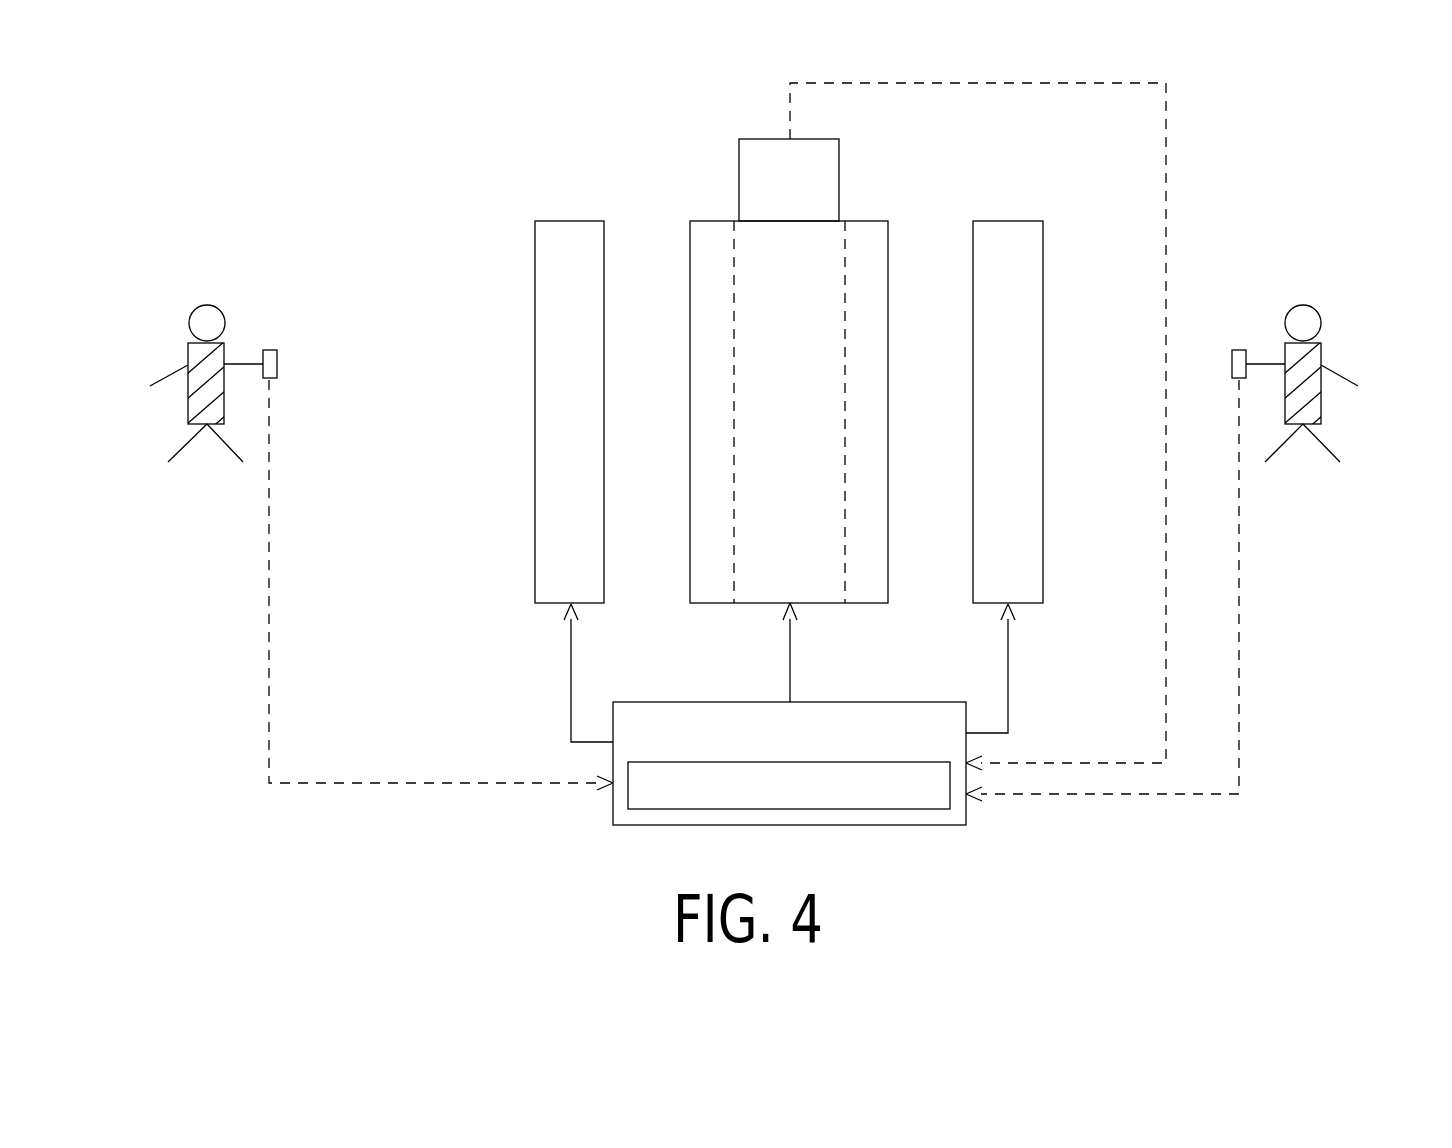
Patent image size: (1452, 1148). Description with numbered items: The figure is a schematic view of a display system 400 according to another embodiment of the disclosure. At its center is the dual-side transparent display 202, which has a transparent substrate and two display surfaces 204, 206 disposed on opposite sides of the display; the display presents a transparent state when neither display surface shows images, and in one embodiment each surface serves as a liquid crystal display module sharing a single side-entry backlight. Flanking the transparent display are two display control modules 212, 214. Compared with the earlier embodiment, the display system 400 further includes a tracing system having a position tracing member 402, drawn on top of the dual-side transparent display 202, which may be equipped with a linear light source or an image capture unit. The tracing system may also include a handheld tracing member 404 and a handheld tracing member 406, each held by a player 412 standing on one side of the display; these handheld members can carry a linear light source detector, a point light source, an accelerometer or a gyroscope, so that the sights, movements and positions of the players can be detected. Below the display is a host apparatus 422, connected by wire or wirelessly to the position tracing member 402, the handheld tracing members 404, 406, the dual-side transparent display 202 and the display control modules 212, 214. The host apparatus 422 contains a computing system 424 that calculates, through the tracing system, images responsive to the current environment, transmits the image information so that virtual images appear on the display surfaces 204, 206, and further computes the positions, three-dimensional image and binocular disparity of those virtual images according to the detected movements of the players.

The display system 400 is at (400, 167).
The position tracing member 402 is at (751, 139).
The handheld tracing member 404 is at (279, 363).
The handheld tracing member 406 is at (1240, 350).
The player 412 is at (227, 319).
The dual-side transparent display 202 is at (820, 439).
The display surface 204 is at (689, 248).
The display surface 206 is at (902, 254).
The display control module 212 is at (535, 385).
The display control module 214 is at (1043, 381).
The host apparatus 422 is at (857, 702).
The computing system 424 is at (846, 825).